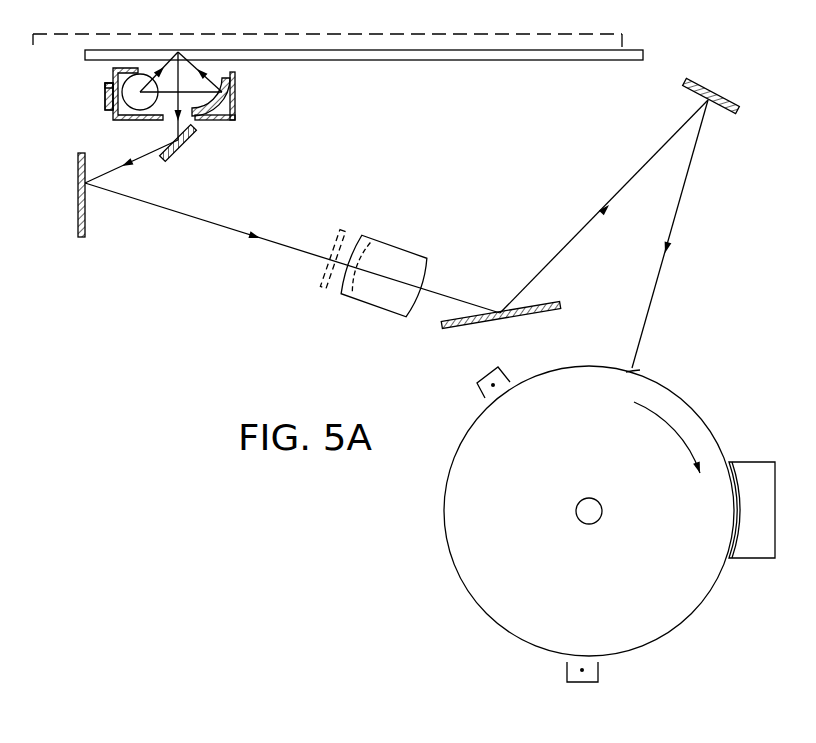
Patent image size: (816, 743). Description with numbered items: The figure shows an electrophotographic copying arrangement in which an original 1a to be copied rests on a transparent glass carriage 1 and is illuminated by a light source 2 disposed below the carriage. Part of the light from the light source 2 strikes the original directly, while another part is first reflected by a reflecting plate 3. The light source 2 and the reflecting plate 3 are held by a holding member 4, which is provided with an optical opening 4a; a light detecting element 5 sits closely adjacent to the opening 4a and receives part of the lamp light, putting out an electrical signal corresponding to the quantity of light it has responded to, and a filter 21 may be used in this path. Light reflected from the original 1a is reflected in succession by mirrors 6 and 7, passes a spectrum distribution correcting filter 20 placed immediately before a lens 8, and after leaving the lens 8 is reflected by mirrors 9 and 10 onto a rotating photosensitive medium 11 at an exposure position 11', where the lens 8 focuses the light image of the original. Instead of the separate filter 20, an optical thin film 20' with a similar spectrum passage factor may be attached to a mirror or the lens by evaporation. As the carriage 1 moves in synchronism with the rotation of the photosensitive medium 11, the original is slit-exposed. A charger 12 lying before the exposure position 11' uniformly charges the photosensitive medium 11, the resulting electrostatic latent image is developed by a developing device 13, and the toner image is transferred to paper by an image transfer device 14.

The transparent glass carriage 1 is at (110, 50).
The original 1a is at (398, 34).
The light source 2 is at (135, 103).
The reflecting plate 3 is at (228, 94).
The holding member 4 is at (113, 119).
The optical opening 4a is at (105, 93).
The filter 21 is at (104, 94).
The light detecting element 5 is at (105, 84).
The mirror 6 is at (188, 141).
The mirror 7 is at (78, 217).
The lens 8 is at (405, 247).
The mirror 9 is at (550, 306).
The mirror 10 is at (710, 93).
The photosensitive medium 11 is at (589, 511).
The exposure position 11' is at (612, 393).
The charger 12 is at (484, 376).
The developing device 13 is at (763, 462).
The image transfer device 14 is at (567, 673).
The spectrum distribution correcting filter 20 is at (326, 243).
The optical thin film 20' is at (338, 284).